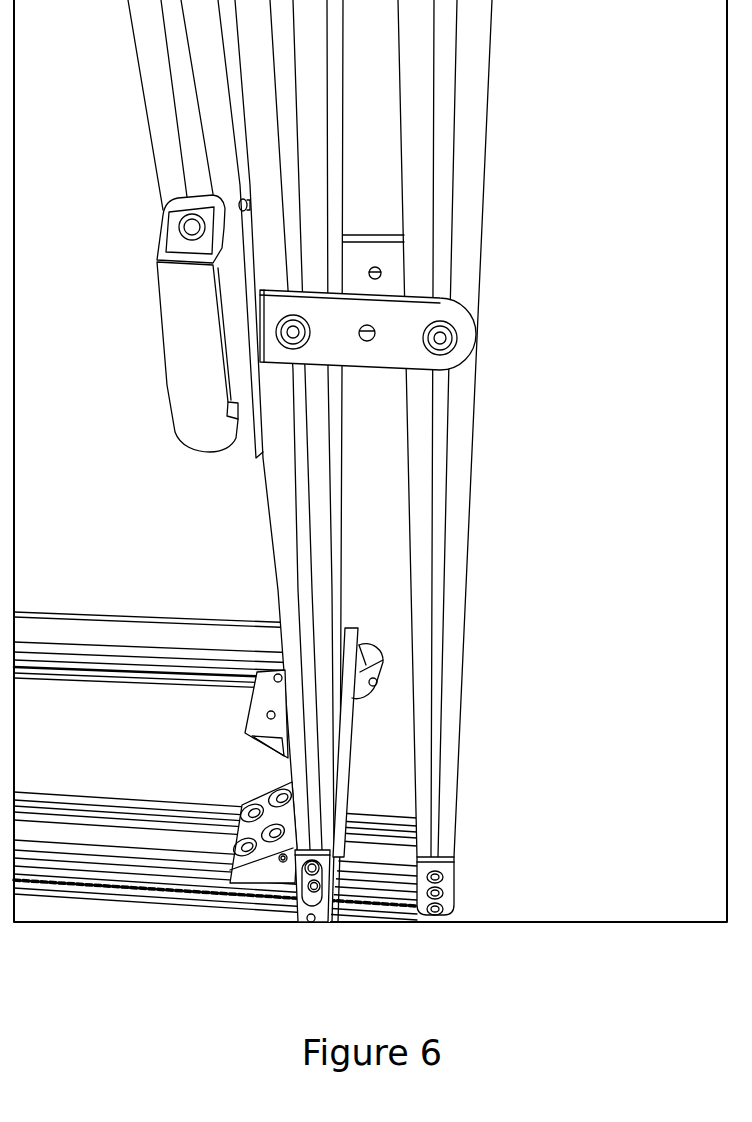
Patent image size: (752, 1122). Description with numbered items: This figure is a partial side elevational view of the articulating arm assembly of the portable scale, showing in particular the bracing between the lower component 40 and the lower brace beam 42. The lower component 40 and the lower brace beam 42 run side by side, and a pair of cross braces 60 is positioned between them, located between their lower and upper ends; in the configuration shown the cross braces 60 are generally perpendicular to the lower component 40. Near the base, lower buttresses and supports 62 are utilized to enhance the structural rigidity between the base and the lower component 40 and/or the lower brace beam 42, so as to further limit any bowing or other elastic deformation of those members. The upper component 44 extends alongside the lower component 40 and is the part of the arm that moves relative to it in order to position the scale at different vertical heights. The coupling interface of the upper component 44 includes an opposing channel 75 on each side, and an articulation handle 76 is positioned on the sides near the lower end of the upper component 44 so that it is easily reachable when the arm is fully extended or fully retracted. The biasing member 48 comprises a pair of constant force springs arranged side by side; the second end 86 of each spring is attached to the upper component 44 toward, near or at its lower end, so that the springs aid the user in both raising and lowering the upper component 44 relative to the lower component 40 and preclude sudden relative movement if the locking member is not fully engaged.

The lower component 40 is at (333, 133).
The lower brace beam 42 is at (480, 214).
The upper component 44 is at (140, 84).
The biasing member 48 is at (226, 150).
The cross braces 60 is at (412, 275).
The lower buttresses and supports 62 is at (239, 751).
The channel 75 is at (166, 38).
The articulation handle 76 is at (151, 350).
The second end 86 is at (226, 204).